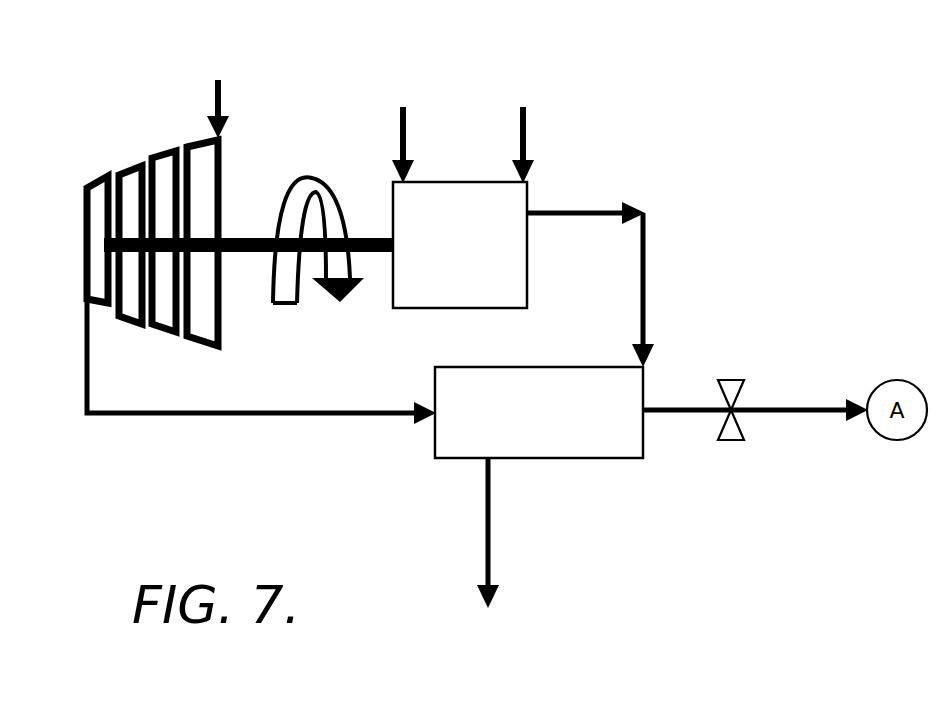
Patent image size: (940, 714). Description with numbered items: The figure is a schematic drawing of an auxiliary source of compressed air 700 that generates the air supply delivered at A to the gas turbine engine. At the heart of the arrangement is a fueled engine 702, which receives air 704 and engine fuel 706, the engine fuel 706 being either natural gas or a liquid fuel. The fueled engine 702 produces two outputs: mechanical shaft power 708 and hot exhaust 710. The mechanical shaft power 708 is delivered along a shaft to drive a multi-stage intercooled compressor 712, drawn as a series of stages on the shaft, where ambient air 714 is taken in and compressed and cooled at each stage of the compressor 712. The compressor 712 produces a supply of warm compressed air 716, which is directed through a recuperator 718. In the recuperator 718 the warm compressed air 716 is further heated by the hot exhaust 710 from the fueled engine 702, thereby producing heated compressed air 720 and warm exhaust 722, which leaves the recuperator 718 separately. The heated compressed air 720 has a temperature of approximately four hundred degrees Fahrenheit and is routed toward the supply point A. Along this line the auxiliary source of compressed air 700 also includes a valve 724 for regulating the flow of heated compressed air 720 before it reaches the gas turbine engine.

The auxiliary source of compressed air 700 is at (762, 100).
The fueled engine 702 is at (460, 245).
The air 704 is at (513, 130).
The engine fuel 706 is at (400, 128).
The mechanical shaft power 708 is at (362, 232).
The hot exhaust 710 is at (590, 274).
The multi-stage intercooled compressor 712 is at (95, 181).
The ambient air 714 is at (210, 92).
The warm compressed air 716 is at (89, 370).
The recuperator 718 is at (539, 412).
The heated compressed air 720 is at (755, 425).
The warm exhaust 722 is at (492, 520).
The valve 724 is at (725, 395).